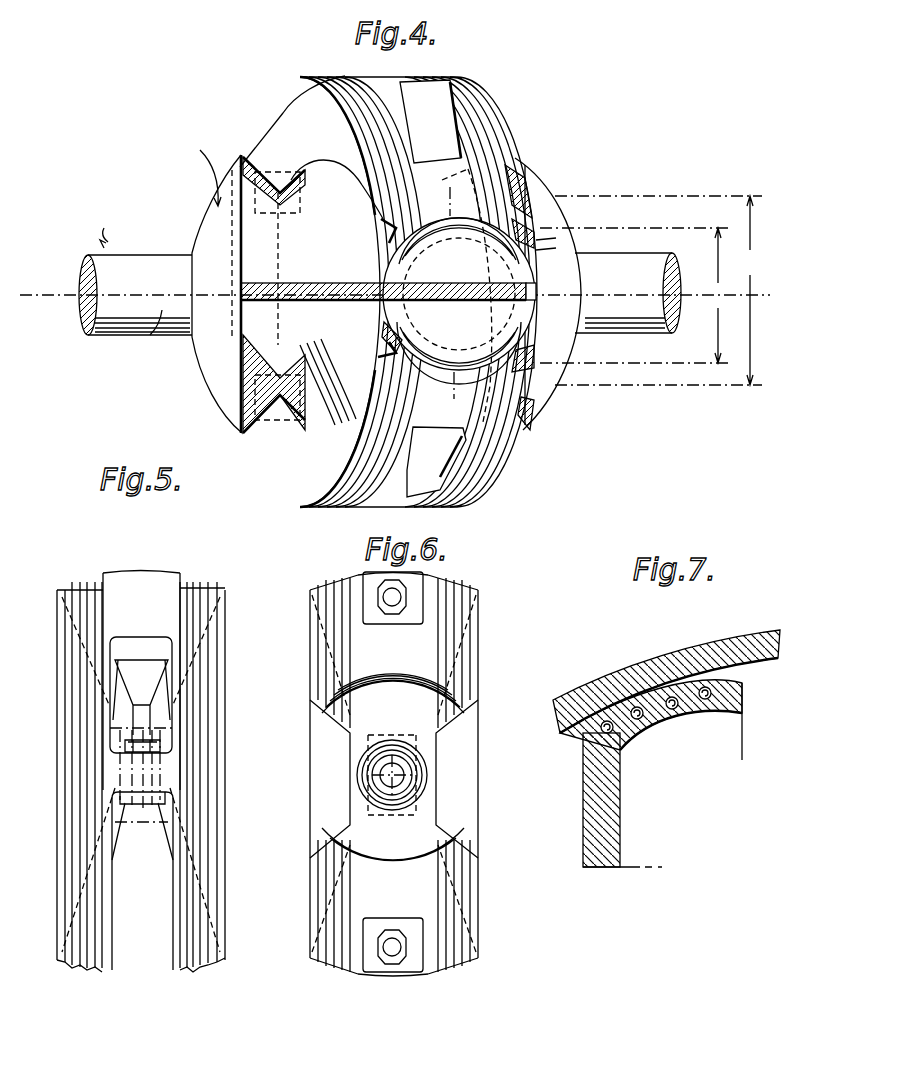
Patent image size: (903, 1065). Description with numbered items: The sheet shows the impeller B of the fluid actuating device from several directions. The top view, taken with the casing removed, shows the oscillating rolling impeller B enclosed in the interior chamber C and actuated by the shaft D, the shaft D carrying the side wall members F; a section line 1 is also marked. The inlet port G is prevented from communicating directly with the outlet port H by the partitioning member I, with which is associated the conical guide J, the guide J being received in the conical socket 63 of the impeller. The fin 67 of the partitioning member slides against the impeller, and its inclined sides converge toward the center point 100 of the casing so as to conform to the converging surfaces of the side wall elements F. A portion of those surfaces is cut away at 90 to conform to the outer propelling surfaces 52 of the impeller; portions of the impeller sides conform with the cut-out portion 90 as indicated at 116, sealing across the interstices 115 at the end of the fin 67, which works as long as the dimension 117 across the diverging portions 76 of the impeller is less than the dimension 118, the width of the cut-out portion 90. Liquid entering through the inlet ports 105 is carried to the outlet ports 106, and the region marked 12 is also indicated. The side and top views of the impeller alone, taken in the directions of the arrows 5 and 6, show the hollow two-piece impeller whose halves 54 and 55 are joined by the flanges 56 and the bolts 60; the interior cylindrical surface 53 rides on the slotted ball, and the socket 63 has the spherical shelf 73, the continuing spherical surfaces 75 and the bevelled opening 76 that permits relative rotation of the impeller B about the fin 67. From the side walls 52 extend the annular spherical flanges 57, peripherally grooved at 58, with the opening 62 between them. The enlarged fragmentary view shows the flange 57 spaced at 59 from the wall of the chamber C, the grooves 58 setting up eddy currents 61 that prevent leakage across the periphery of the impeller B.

In FIG. 4, the section line 1- 1 is at (20, 290).
In FIG. 6, the viewing direction arrow 5 is at (410, 982).
In FIG. 5, the viewing direction arrow 6 is at (140, 556).
In FIG. 4, the slot 12 is at (457, 190).
In FIG. 4, the propelling surfaces 52 is at (305, 465).
In FIG. 5, the propelling surfaces 52 is at (205, 626).
In FIG. 6, the propelling surfaces 52 is at (470, 620).
In FIG. 5, the interior cylindrical surface 53 is at (128, 820).
In FIG. 6, the interior cylindrical surface 53 is at (440, 745).
In FIG. 5, the impeller half 54 is at (113, 605).
In FIG. 5, the impeller half 55 is at (122, 842).
In FIG. 5, the flanges 56 is at (128, 784).
In FIG. 6, the flanges 56 is at (428, 582).
In FIG. 5, the annular spherical flanges 57 is at (82, 583).
In FIG. 7, the annular spherical flanges 57 is at (745, 690).
In FIG. 5, the peripheral grooves 58 is at (100, 968).
In FIG. 7, the peripheral grooves 58 is at (665, 718).
In FIG. 7, the spacing 59 is at (760, 650).
In FIG. 5, the bolts 60 is at (127, 748).
In FIG. 6, the bolts 60 is at (388, 590).
In FIG. 7, the eddy currents 61 is at (612, 722).
In FIG. 4, the opening 62 is at (425, 452).
In FIG. 5, the opening 62 is at (148, 954).
In FIG. 7, the opening 62 is at (762, 745).
In FIG. 6, the conical socket 63 is at (428, 812).
In FIG. 4, the fin 67 is at (350, 283).
In FIG. 6, the spherical surface 73 is at (352, 812).
In FIG. 6, the spherical surfaces 75 is at (468, 782).
In FIG. 6, the bevelled opening 76 is at (468, 704).
In FIG. 4, the cut-out portion 90 is at (540, 246).
In FIG. 4, the center point 100 is at (398, 285).
In FIG. 5, the center point 100 is at (143, 812).
In FIG. 6, the center point 100 is at (393, 787).
In FIG. 4, the inlet ports 105 is at (273, 170).
In FIG. 4, the outlet ports 106 is at (278, 420).
In FIG. 4, the interstices 115 is at (538, 295).
In FIG. 4, the seal 116 is at (516, 200).
In FIG. 4, the dimension 117 is at (638, 295).
In FIG. 4, the dimension 118 is at (663, 290).
In FIG. 4, the impeller B is at (448, 102).
In FIG. 6, the impeller B is at (465, 913).
In FIG. 7, the impeller B is at (600, 843).
In FIG. 7, the interior chamber C is at (685, 665).
In FIG. 4, the shaft D is at (125, 318).
In FIG. 4, the side wall members F is at (630, 178).
In FIG. 4, the inlet port G is at (482, 168).
In FIG. 4, the outlet port H is at (470, 420).
In FIG. 4, the partitioning member I is at (303, 265).
In FIG. 4, the conical guide J is at (398, 315).